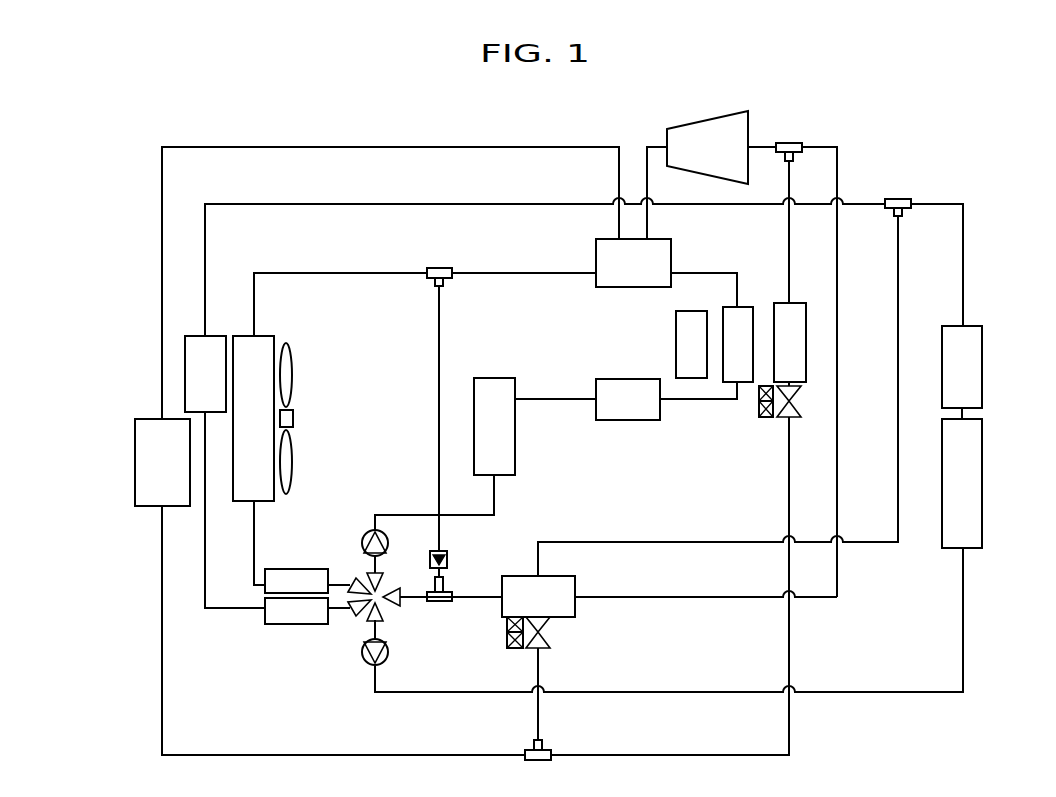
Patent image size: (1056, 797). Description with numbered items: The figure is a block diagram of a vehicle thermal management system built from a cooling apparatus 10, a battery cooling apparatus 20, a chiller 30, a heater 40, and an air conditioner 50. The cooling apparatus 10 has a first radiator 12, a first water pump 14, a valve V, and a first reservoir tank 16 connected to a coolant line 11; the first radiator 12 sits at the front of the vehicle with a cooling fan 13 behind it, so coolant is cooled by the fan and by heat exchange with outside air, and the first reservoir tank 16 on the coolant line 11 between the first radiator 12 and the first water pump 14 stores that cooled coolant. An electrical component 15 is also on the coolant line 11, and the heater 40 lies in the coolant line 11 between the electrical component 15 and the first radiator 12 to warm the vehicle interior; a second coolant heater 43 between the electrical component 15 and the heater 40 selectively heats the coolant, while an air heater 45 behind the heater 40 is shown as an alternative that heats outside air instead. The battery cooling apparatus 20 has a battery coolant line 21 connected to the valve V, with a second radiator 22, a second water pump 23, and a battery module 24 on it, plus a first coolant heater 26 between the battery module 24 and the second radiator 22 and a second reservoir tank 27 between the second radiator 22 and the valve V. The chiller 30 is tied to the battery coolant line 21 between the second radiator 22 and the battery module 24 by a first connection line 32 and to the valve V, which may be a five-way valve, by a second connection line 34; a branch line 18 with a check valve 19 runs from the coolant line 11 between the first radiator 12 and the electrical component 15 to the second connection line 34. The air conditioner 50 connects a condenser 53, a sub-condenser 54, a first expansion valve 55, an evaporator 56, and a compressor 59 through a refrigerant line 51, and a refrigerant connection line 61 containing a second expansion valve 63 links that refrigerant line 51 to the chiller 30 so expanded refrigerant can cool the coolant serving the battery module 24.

The cooling apparatus 10 is at (472, 402).
The coolant line 11 is at (393, 276).
The first radiator 12 is at (262, 336).
The cooling fan 13 is at (292, 375).
The first water pump 14 is at (366, 532).
The electrical component 15 is at (492, 378).
The first reservoir tank 16 is at (296, 569).
The branch line 18 is at (439, 378).
The check valve 19 is at (447, 560).
The battery cooling apparatus 20 is at (604, 450).
The battery coolant line 21 is at (391, 206).
The second radiator 22 is at (210, 336).
The second water pump 23 is at (369, 666).
The battery module 24 is at (982, 487).
The first coolant heater 26 is at (982, 372).
The second reservoir tank 27 is at (296, 624).
The chiller 30 is at (575, 585).
The first connection line 32 is at (640, 542).
The second connection line 34 is at (476, 599).
The heater 40 is at (740, 306).
The second coolant heater 43 is at (628, 421).
The air heater 45 is at (676, 346).
The air conditioner 50 is at (456, 448).
The refrigerant line 51 is at (162, 305).
The condenser 53 is at (671, 252).
The sub-condenser 54 is at (135, 462).
The first expansion valve 55 is at (766, 419).
The evaporator 56 is at (793, 303).
The compressor 59 is at (706, 120).
The refrigerant connection line 61 is at (837, 378).
The second expansion valve 63 is at (550, 630).
The valve V is at (392, 605).